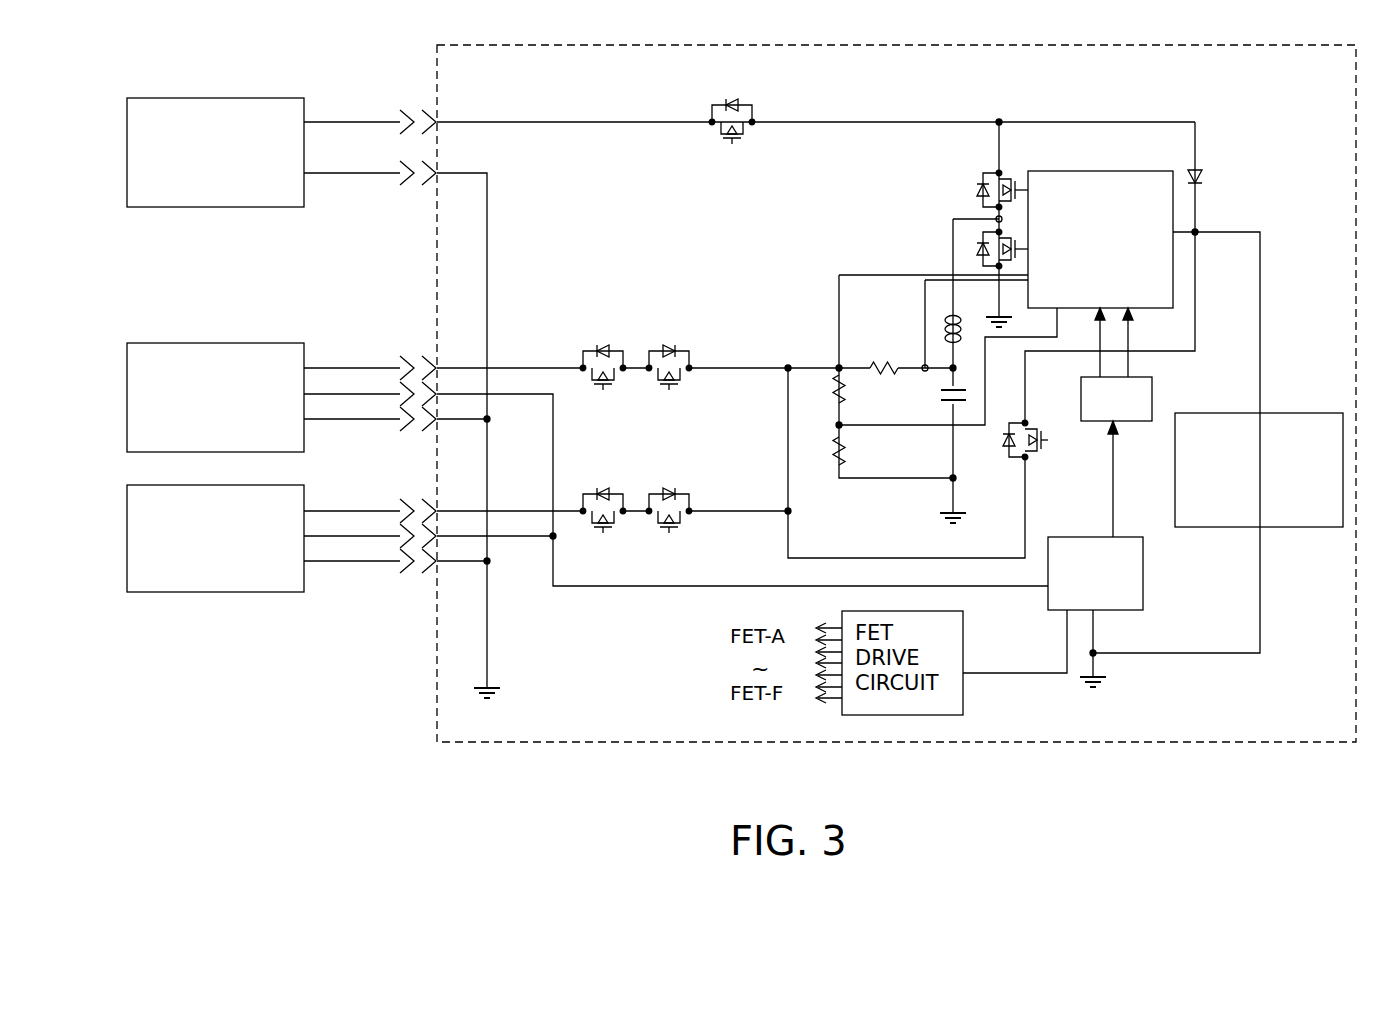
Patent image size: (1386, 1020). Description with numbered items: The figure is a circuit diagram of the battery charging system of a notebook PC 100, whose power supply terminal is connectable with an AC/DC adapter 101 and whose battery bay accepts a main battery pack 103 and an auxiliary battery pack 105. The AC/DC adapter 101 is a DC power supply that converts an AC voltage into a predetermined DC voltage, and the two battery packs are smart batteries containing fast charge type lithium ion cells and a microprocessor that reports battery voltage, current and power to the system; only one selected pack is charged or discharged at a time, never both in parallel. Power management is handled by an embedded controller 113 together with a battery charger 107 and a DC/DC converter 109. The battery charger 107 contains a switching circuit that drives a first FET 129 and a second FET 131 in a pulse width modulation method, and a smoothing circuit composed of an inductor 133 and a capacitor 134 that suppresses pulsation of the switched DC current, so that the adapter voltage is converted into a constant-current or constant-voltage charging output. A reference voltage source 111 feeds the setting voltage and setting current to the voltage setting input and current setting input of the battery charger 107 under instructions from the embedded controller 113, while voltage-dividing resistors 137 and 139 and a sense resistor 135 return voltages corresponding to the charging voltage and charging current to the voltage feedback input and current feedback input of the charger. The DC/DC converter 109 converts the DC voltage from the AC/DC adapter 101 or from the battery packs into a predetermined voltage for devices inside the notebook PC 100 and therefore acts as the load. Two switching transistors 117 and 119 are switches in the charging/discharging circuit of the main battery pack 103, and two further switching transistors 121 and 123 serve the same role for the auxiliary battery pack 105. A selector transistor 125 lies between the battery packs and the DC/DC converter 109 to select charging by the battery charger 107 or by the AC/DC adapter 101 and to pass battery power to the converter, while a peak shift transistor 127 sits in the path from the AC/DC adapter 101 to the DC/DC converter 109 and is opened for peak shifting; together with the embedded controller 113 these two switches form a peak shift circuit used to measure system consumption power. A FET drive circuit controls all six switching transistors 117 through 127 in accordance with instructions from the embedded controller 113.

The notebook PC 100 is at (497, 89).
The AC/DC adapter 101 is at (228, 98).
The main battery pack 103 is at (228, 343).
The auxiliary battery pack 105 is at (229, 592).
The battery charger 107 is at (1104, 171).
The DC/DC converter 109 is at (1285, 413).
The reference voltage source 111 is at (1152, 394).
The embedded controller 113 is at (1134, 531).
The FET-A 117 is at (603, 390).
The FET-B 119 is at (669, 390).
The FET-C 121 is at (603, 533).
The FET-D 123 is at (669, 533).
The FET-E 125 is at (1014, 451).
The FET-F 127 is at (732, 144).
The FET 129 is at (983, 187).
The FET 131 is at (983, 251).
The inductor 133 is at (946, 317).
The capacitor 134 is at (962, 406).
The sense resistor 135 is at (883, 362).
The voltage-dividing resistor 137 is at (844, 388).
The voltage-dividing resistor 139 is at (844, 448).